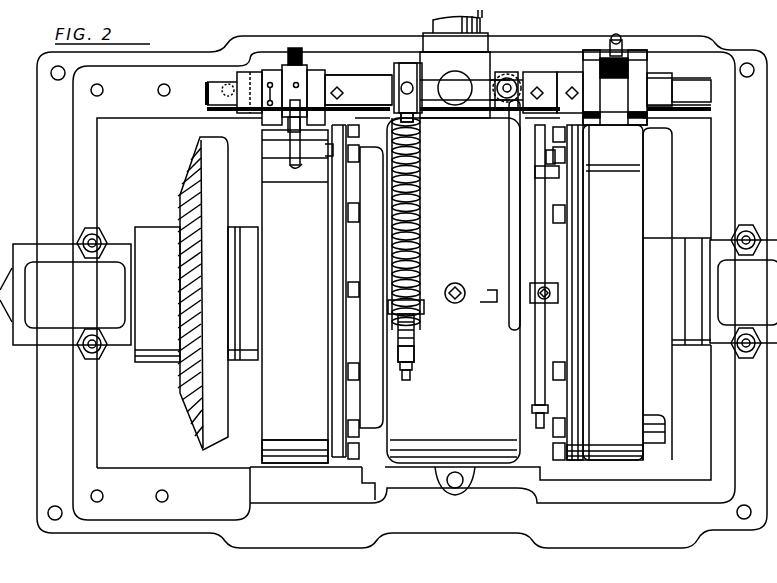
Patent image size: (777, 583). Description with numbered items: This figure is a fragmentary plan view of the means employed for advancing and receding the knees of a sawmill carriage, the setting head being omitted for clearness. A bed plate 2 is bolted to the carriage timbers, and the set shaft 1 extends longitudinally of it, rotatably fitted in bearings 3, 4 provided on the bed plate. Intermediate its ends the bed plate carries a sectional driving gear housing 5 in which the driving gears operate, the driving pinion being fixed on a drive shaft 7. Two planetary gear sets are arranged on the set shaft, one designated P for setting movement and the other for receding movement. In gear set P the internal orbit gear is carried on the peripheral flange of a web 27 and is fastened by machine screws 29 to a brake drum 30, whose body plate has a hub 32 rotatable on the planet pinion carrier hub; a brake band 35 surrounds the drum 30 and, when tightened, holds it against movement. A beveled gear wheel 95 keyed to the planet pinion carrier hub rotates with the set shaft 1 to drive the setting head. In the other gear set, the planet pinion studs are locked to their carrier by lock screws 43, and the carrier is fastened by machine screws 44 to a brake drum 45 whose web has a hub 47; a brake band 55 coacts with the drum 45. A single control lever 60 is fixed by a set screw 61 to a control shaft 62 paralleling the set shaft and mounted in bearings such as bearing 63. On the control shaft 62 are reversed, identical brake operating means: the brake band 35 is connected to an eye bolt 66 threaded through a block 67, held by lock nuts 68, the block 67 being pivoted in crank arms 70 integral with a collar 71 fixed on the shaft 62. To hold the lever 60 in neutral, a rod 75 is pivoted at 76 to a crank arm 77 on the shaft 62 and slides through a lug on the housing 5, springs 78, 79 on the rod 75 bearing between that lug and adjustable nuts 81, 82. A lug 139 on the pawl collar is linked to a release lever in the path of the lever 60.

The set shaft 1 is at (3, 262).
The bed plate 2 is at (612, 550).
The bearing 3 is at (52, 268).
The bearing 4 is at (738, 262).
The driving gear housing 5 is at (453, 290).
The drive shaft 7 is at (483, 22).
The web 27 is at (322, 294).
The machine screws 29 is at (350, 290).
The brake drum 30 is at (262, 446).
The hub 32 is at (244, 296).
The brake band 35 is at (282, 394).
The lock screws 43 is at (549, 152).
The machine screws 44 is at (560, 366).
The brake drum 45 is at (655, 418).
The hub 47 is at (672, 332).
The brake band 55 is at (628, 306).
The control lever 60 is at (509, 245).
The set screw 61 is at (540, 86).
The control shaft 62 is at (368, 88).
The bearing 63 is at (691, 82).
The eye bolt 66 is at (297, 140).
The block 67 is at (297, 78).
The lock nuts 68 is at (289, 56).
The crank arms 70 is at (335, 80).
The collar 71 is at (244, 78).
The rod 75 is at (412, 364).
The pivotal connection 76 is at (465, 75).
The crank arm 77 is at (398, 68).
The spring 78 is at (416, 318).
The spring 79 is at (422, 190).
The adjustable abutment nut 81 is at (414, 350).
The adjustable abutment nut 82 is at (420, 122).
The beveled gear wheel 95 is at (178, 178).
The lug 139 is at (490, 288).
The planetary gear set P is at (303, 468).